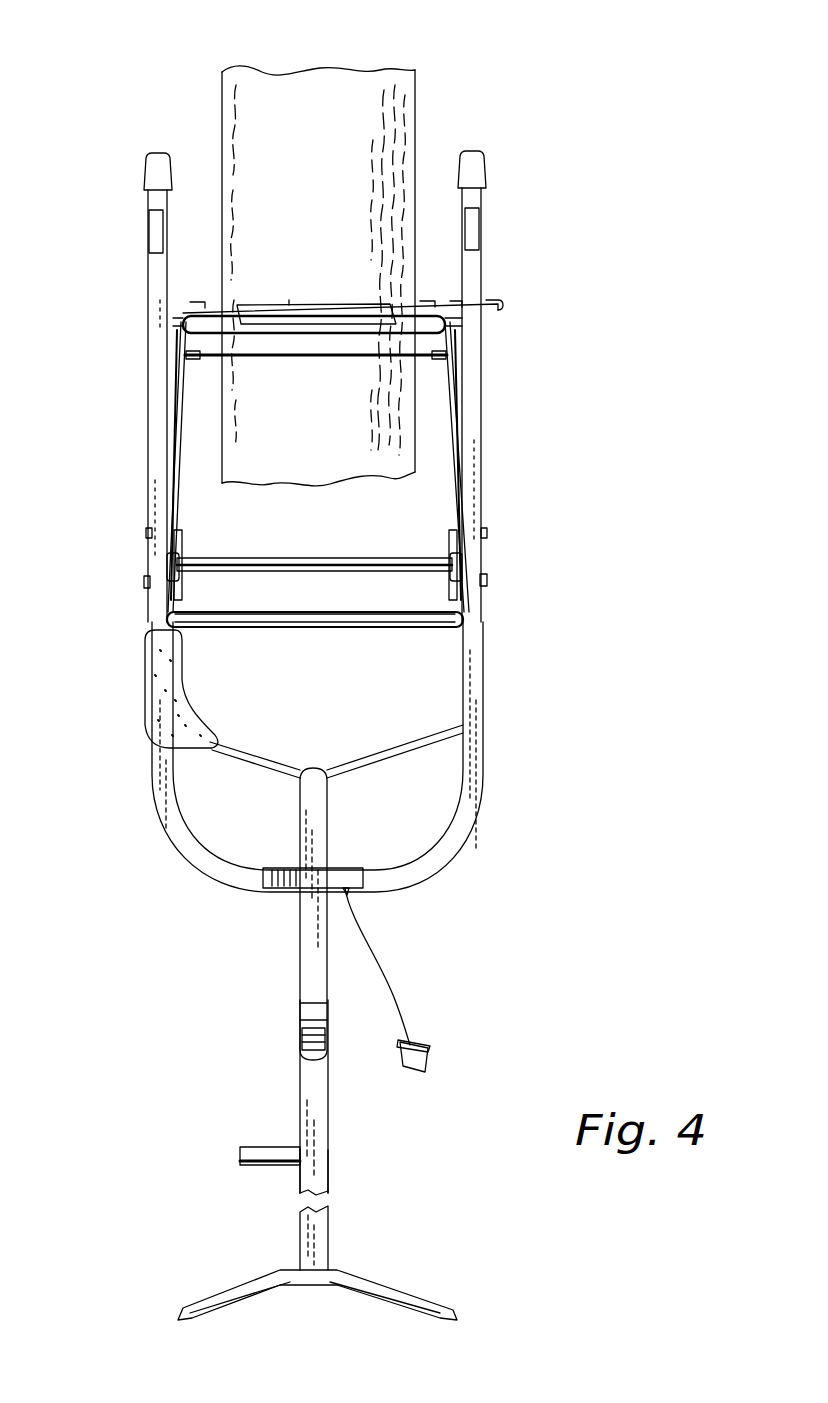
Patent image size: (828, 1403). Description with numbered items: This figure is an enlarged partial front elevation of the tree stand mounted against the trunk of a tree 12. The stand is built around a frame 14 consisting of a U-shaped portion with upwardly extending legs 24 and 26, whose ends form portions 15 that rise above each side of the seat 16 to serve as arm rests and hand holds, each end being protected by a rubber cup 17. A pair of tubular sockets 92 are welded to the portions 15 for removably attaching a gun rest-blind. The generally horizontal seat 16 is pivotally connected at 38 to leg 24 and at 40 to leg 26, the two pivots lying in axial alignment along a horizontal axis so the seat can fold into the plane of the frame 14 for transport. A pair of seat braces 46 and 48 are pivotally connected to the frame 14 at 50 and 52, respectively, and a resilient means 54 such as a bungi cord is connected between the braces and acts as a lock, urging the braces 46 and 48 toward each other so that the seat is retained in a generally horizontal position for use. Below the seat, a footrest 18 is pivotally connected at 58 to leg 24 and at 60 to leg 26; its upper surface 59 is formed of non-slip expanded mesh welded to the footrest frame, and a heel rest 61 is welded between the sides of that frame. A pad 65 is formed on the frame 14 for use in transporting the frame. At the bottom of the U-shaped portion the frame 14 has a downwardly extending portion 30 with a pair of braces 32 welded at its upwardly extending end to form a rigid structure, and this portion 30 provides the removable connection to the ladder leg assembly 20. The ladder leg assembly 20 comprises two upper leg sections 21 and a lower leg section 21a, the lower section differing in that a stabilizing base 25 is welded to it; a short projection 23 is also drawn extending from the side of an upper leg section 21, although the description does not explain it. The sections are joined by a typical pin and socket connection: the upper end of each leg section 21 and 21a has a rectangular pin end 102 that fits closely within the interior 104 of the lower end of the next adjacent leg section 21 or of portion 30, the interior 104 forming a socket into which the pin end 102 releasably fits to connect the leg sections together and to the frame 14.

The tree 12 is at (403, 102).
The frame 14 is at (486, 514).
The portion of frame 15 is at (158, 279).
The seat 16 is at (289, 298).
The rubber cup 17 is at (155, 160).
The footrest 18 is at (488, 615).
The ladder leg assembly 20 is at (333, 1103).
The upper leg section 21 is at (322, 1170).
The lower leg section 21a is at (322, 1233).
The step peg 23 is at (252, 1147).
The leg 24 is at (478, 428).
The stabilizing base 25 is at (420, 1298).
The leg 26 is at (153, 448).
The downwardly extending portion 30 is at (305, 912).
The braces 32 is at (386, 755).
The pivot 38 is at (470, 330).
The pivot 40 is at (170, 328).
The seat brace 46 is at (462, 478).
The seat brace 48 is at (168, 495).
The pivotal connection 50 is at (458, 533).
The pivotal connection 52 is at (180, 531).
The resilient means 54 is at (317, 360).
The pivot 58 is at (487, 580).
The upper surface 59 is at (325, 612).
The pivot 60 is at (145, 584).
The heel rest 61 is at (338, 565).
The pad 65 is at (148, 695).
The tubular socket 92 is at (151, 231).
The pin end 102 is at (300, 1036).
The interior 104 is at (296, 1003).